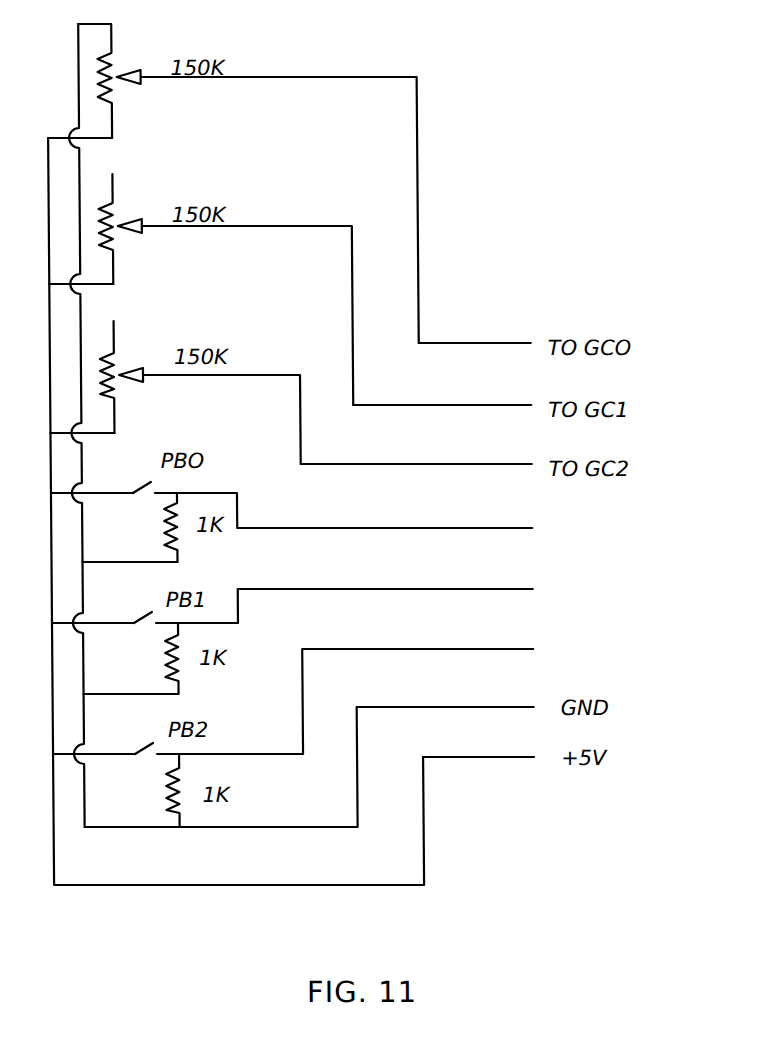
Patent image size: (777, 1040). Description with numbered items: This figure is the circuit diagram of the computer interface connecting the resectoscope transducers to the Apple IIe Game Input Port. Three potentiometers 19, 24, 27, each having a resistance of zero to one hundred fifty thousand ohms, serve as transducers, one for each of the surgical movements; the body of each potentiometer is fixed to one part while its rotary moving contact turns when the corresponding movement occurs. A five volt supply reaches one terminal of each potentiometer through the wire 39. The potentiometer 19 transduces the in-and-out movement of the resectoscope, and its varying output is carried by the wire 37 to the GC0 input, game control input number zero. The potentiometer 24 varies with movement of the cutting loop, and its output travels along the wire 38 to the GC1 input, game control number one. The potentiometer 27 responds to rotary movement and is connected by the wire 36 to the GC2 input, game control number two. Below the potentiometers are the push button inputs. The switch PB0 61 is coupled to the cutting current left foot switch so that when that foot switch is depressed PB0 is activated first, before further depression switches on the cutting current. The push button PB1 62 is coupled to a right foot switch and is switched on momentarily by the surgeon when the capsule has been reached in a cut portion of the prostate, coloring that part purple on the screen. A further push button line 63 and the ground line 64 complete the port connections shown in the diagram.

The potentiometer 19 is at (118, 86).
The potentiometer 24 is at (117, 232).
The potentiometer 27 is at (118, 380).
The wire 37 is at (451, 343).
The wire 38 is at (446, 405).
The wire 36 is at (443, 464).
The switch PB0 61 is at (440, 528).
The push button PB1 62 is at (438, 589).
The pushbutton PB2 output line 63 is at (449, 649).
The ground line 64 is at (453, 707).
The wire 39 is at (455, 757).